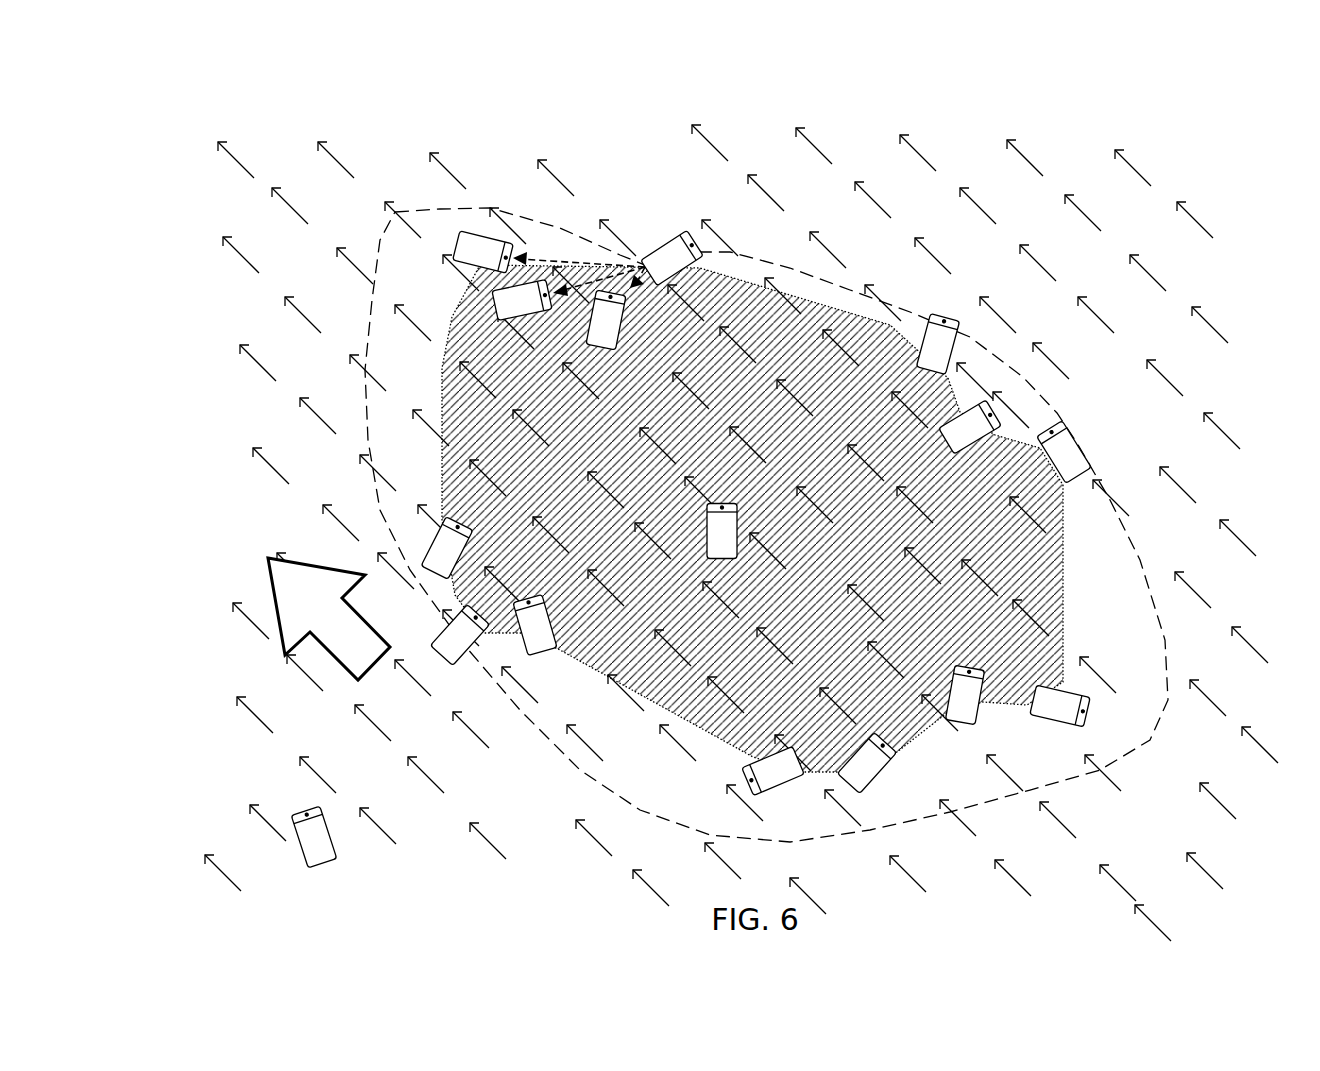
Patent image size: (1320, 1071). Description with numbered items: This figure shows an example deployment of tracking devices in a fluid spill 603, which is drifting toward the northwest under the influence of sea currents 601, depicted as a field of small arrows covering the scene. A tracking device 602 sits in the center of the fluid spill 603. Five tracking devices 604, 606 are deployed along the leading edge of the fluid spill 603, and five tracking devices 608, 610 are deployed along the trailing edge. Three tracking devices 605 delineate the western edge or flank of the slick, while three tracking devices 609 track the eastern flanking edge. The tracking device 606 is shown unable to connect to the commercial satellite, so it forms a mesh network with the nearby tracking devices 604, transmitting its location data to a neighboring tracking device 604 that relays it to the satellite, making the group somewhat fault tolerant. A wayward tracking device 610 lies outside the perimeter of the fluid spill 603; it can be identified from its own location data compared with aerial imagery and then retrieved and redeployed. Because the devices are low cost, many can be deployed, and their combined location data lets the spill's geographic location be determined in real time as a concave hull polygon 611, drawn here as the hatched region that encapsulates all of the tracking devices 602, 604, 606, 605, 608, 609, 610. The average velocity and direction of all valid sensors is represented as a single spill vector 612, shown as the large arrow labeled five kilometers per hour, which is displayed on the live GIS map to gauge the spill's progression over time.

The sea currents 601 is at (747, 533).
The tracking device 602 is at (764, 510).
The fluid spill 603 is at (766, 525).
The tracking devices 604 is at (510, 323).
The tracking devices 605 is at (477, 615).
The tracking device 606 is at (643, 273).
The tracking devices 608 is at (1057, 690).
The tracking devices 609 is at (1050, 460).
The wayward tracking device 610 is at (356, 817).
The concave hull polygon 611 is at (752, 518).
The spill vector 612 is at (315, 593).